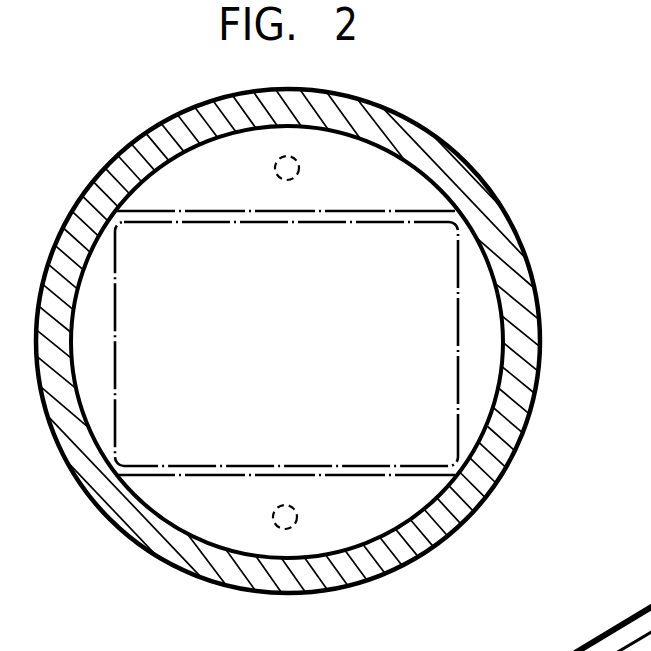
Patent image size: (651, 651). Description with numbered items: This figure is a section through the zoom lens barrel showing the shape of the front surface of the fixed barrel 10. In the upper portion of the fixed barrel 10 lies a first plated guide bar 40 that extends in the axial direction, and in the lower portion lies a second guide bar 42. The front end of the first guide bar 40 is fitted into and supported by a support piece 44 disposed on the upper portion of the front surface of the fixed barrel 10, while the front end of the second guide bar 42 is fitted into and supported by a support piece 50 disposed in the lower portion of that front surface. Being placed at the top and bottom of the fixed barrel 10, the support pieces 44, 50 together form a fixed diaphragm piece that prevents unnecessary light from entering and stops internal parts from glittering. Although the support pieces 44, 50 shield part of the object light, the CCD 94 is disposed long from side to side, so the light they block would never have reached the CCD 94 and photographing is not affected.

The fixed barrel 10 is at (513, 233).
The first guide bar 40 is at (297, 159).
The second guide bar 42 is at (297, 525).
The support piece 44 is at (405, 182).
The support piece 50 is at (383, 497).
The CCD 94 is at (460, 372).